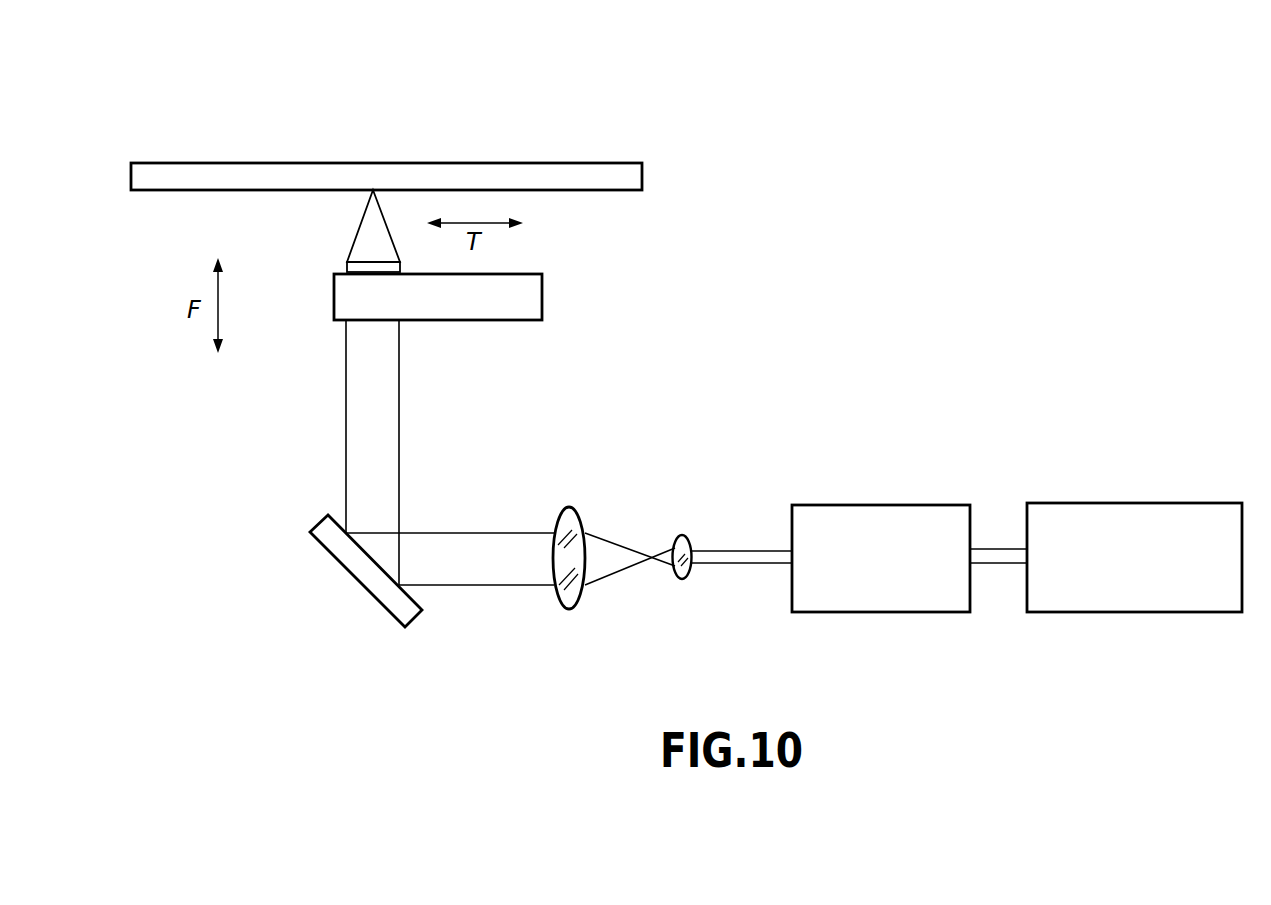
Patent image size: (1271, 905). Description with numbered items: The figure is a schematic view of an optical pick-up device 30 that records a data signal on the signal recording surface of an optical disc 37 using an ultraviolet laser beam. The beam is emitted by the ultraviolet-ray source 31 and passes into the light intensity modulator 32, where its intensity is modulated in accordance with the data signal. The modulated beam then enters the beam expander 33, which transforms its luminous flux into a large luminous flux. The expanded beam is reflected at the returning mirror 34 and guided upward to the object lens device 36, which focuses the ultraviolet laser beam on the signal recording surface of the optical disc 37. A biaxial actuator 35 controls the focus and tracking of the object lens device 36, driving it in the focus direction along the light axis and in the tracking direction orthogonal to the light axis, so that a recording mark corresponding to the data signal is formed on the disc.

The optical pick-up device 30 is at (612, 133).
The ultraviolet-ray source 31 is at (1130, 503).
The light intensity modulator 32 is at (878, 505).
The beam expander 33 is at (618, 525).
The returning mirror 34 is at (322, 547).
The biaxial actuator 35 is at (543, 298).
The object lens device 36 is at (345, 268).
The optical disc 37 is at (452, 163).